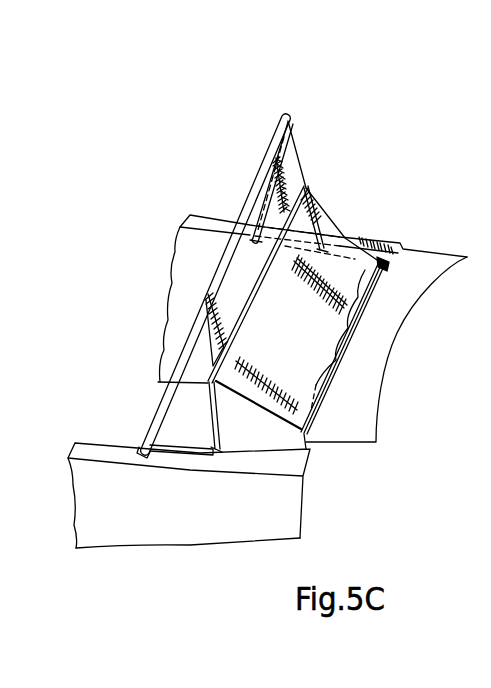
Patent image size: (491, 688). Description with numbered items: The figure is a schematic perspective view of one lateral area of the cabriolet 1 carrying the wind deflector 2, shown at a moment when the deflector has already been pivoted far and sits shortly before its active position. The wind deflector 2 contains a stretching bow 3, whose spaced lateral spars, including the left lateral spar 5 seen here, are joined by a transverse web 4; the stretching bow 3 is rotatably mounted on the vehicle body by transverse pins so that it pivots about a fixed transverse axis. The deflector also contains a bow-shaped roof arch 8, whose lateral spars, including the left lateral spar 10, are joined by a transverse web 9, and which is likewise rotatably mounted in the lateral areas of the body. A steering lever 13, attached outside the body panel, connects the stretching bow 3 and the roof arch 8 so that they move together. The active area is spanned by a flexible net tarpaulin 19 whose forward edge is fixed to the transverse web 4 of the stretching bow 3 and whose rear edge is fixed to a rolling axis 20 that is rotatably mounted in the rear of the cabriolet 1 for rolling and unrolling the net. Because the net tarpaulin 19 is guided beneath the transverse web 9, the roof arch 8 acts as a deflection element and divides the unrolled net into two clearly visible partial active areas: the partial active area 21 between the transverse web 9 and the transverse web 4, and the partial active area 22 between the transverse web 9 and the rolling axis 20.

The cabriolet 1 is at (137, 577).
The wind deflector 2 is at (293, 84).
The stretching bow 3 is at (256, 140).
The transverse web 4 is at (183, 302).
The left lateral spar 5 is at (157, 418).
The roof arch 8 is at (313, 189).
The transverse web 9 is at (260, 285).
The left lateral spar 10 is at (247, 395).
The steering lever 13 is at (175, 453).
The net tarpaulin 19 is at (272, 421).
The rolling axis 20 is at (403, 247).
The partial active area 21 is at (297, 152).
The partial active area 22 is at (347, 250).